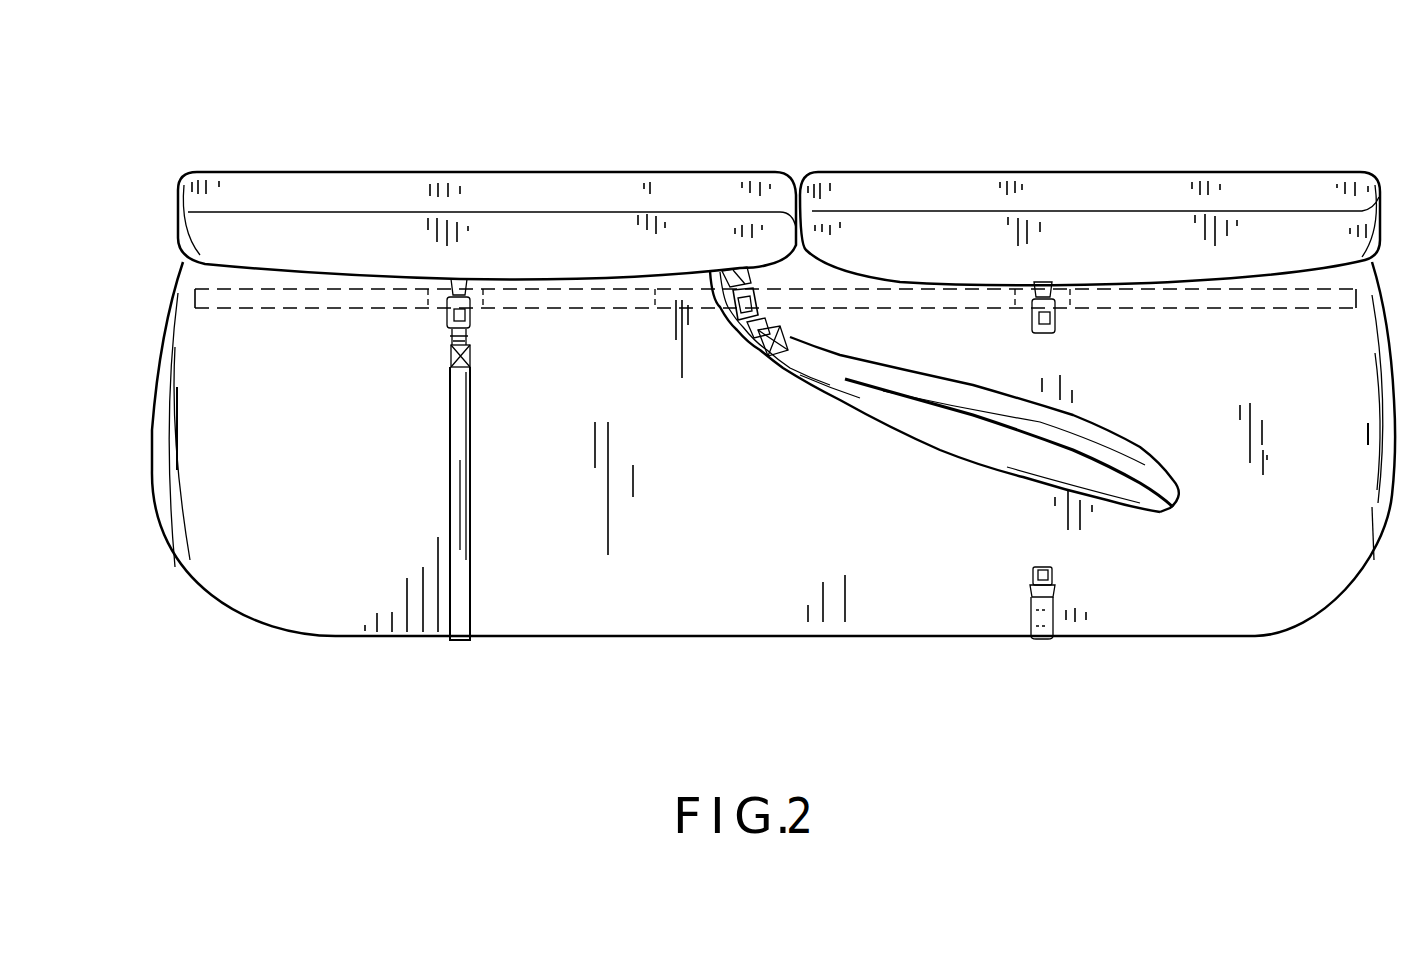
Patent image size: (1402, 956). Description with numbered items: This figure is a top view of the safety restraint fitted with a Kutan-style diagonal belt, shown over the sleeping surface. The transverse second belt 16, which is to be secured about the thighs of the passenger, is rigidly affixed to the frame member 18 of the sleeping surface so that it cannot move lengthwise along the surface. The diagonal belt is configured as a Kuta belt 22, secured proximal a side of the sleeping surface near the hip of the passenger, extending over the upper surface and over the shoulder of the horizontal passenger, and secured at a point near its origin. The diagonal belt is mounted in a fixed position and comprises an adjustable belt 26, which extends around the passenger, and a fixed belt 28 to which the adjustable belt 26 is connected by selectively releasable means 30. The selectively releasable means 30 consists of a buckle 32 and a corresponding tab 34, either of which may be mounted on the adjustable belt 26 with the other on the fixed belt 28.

The second belt 16 is at (465, 570).
The frame member 18 is at (245, 299).
The Kuta belt 22 is at (1147, 452).
The adjustable belt 26 is at (973, 443).
The fixed belt 28 is at (749, 266).
The selectively releasable means 30 is at (723, 322).
The buckle 32 is at (1057, 322).
The tab 34 is at (1030, 575).